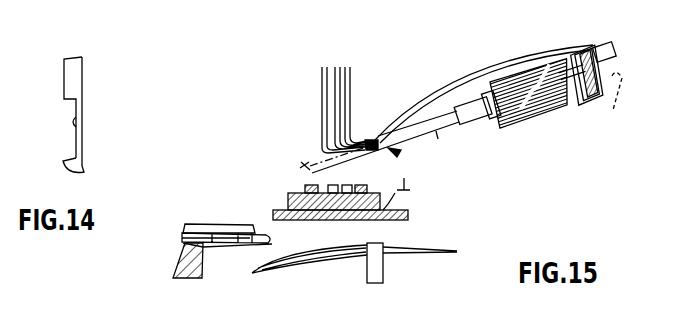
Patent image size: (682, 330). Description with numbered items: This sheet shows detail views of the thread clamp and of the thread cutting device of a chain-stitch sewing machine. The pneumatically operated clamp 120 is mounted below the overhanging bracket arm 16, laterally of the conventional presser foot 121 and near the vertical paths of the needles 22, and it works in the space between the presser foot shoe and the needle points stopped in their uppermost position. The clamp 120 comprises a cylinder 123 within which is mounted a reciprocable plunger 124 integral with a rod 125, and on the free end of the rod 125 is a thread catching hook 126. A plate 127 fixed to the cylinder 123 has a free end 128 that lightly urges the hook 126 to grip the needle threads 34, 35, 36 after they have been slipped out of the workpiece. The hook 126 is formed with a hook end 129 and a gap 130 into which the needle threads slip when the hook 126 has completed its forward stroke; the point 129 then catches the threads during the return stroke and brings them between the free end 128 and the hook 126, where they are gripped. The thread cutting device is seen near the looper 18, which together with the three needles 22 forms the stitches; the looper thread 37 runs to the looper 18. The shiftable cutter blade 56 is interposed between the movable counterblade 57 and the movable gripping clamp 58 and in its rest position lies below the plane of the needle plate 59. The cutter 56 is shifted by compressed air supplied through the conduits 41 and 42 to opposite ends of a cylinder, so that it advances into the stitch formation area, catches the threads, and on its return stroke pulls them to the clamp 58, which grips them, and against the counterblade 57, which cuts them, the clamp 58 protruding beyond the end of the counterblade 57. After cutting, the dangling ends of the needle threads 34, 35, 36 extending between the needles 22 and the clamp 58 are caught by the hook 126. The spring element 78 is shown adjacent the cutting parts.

In FIG. 15, the overhanging bracket arm 16 is at (182, 263).
In FIG. 15, the looper 18 is at (383, 272).
In FIG. 15, the needles 22 is at (322, 80).
In FIG. 15, the needle thread 34 is at (330, 155).
In FIG. 15, the needle thread 35 is at (343, 142).
In FIG. 15, the needle thread 36 is at (368, 143).
In FIG. 15, the looper thread 37 is at (457, 252).
In FIG. 15, the conduit 41 is at (613, 102).
In FIG. 15, the conduit 42 is at (606, 42).
In FIG. 15, the cutter blade 56 is at (185, 235).
In FIG. 15, the counterblade 57 is at (210, 224).
In FIG. 15, the gripping clamp 58 is at (228, 247).
In FIG. 15, the needle plate 59 is at (277, 212).
In FIG. 15, the spring 78 is at (272, 248).
In FIG. 15, the pneumatically operated clamp 120 is at (535, 133).
In FIG. 15, the presser foot 121 is at (305, 187).
In FIG. 15, the cylinder 123 is at (555, 108).
In FIG. 15, the plunger 124 is at (578, 100).
In FIG. 15, the rod 125 is at (487, 118).
In FIG. 14, the thread catching hook 126 is at (81, 77).
In FIG. 15, the thread catching hook 126 is at (437, 133).
In FIG. 15, the plate 127 is at (472, 77).
In FIG. 15, the free end 128 is at (369, 142).
In FIG. 14, the hook end 129 is at (84, 172).
In FIG. 15, the hook end 129 is at (303, 164).
In FIG. 14, the gap 130 is at (81, 132).